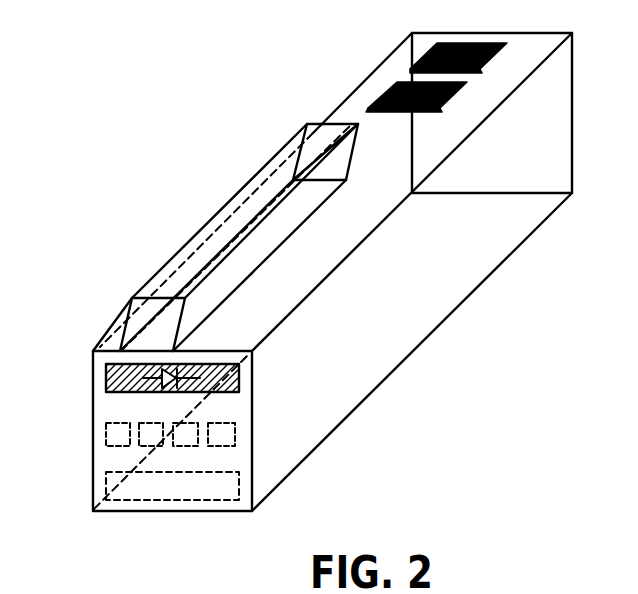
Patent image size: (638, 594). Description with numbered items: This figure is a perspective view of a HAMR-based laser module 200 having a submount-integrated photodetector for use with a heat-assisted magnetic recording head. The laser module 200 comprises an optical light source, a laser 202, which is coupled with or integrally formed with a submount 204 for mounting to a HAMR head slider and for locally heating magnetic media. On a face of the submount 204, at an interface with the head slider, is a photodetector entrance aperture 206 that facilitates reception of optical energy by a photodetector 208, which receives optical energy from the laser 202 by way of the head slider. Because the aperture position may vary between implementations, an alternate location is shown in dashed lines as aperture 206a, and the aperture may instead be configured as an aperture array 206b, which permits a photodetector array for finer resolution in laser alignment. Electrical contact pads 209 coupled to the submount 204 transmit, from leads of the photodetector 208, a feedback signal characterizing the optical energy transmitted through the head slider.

The laser module 200 is at (163, 126).
The laser 202 is at (220, 230).
The submount 204 is at (432, 308).
The aperture 206 is at (115, 380).
The aperture 206a is at (106, 475).
The aperture array 206b is at (103, 462).
The photodetector 208 is at (193, 393).
The electrical contact pads 209 is at (397, 85).